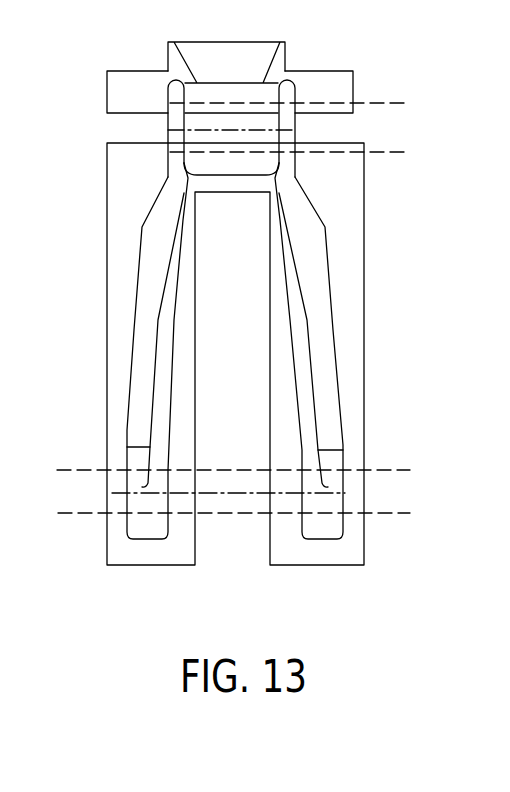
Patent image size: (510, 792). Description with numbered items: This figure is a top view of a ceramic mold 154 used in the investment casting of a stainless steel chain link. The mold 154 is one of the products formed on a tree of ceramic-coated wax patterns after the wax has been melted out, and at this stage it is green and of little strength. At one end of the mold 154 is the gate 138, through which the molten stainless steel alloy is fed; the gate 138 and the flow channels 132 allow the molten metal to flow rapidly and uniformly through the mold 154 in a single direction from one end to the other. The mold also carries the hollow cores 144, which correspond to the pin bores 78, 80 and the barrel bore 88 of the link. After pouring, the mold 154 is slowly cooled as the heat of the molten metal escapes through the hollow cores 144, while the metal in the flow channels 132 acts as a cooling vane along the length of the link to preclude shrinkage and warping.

The gate 138 is at (264, 60).
The hollow cores 144 is at (128, 113).
The barrel bore 88 is at (398, 104).
The ceramic mold 154 is at (366, 247).
The flow channels 132 is at (146, 295).
The pin bore 78 is at (388, 470).
The pin bore 80 is at (86, 513).